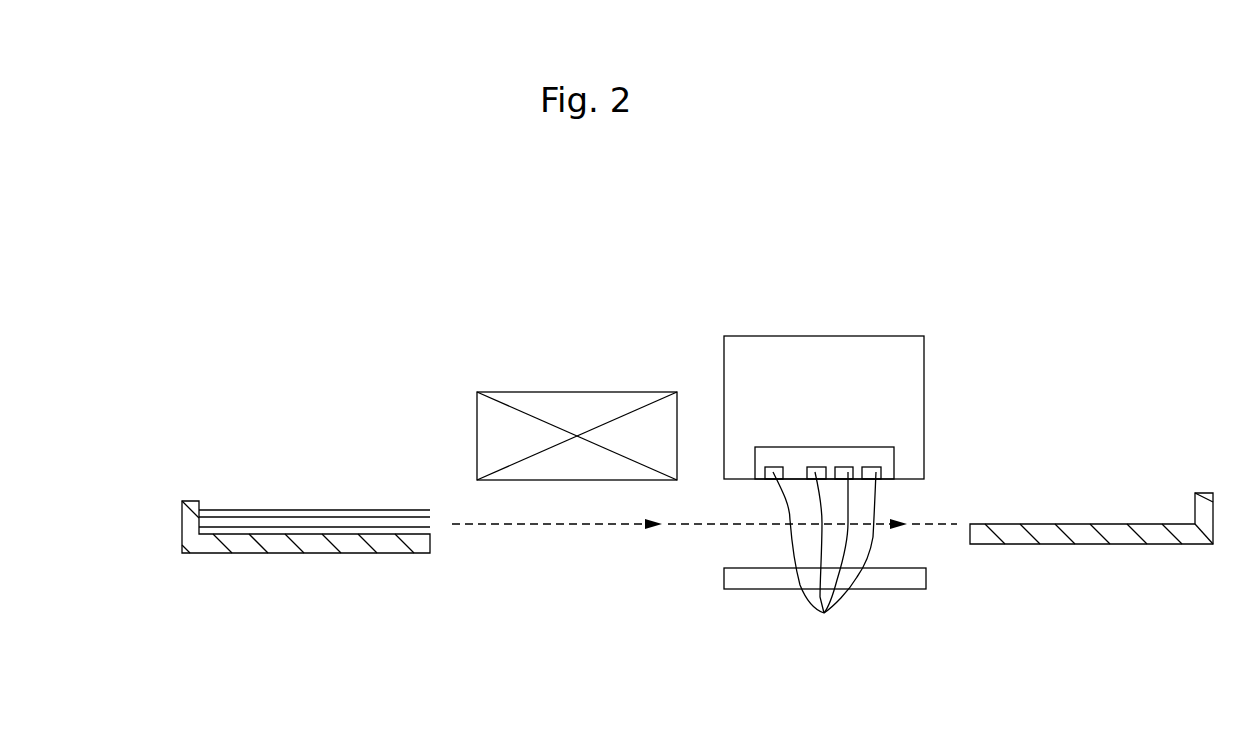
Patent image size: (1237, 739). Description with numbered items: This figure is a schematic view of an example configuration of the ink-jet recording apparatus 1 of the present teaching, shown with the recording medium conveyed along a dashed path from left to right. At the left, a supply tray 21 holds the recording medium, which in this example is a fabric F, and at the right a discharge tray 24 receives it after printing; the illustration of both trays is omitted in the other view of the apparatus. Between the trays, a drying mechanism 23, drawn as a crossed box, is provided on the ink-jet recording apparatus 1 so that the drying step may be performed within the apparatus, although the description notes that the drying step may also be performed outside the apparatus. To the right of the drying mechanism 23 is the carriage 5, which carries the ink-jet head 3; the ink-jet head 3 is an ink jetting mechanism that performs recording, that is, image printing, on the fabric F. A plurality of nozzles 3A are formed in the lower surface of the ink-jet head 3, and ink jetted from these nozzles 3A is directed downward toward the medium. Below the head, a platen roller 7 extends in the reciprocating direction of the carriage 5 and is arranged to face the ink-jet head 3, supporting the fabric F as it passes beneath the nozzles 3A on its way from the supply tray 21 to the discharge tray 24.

The ink-jet recording apparatus 1 is at (950, 293).
The ink-jet head 3 is at (855, 447).
The nozzles 3A is at (824, 562).
The carriage 5 is at (785, 336).
The platen roller 7 is at (900, 577).
The supply tray 21 is at (316, 543).
The drying mechanism 23 is at (582, 392).
The discharge tray 24 is at (1093, 547).
The fabric F is at (332, 510).